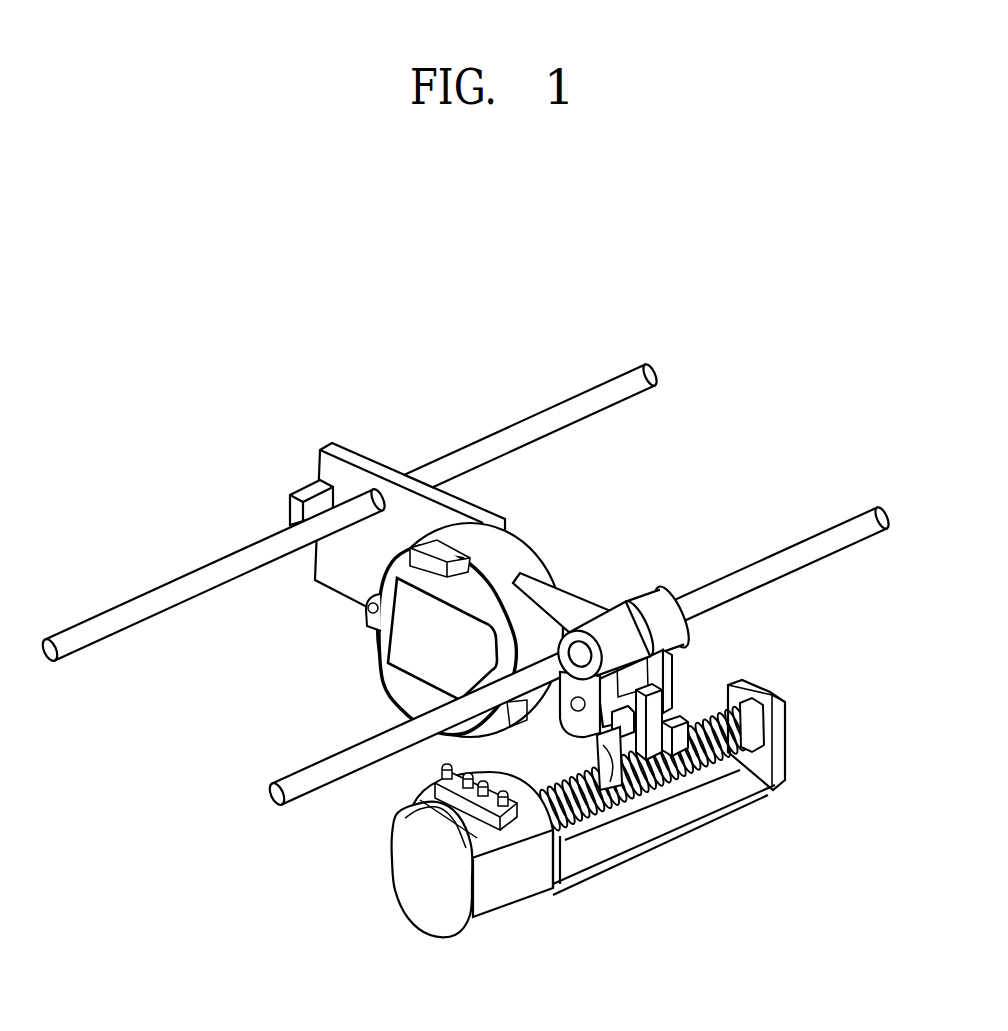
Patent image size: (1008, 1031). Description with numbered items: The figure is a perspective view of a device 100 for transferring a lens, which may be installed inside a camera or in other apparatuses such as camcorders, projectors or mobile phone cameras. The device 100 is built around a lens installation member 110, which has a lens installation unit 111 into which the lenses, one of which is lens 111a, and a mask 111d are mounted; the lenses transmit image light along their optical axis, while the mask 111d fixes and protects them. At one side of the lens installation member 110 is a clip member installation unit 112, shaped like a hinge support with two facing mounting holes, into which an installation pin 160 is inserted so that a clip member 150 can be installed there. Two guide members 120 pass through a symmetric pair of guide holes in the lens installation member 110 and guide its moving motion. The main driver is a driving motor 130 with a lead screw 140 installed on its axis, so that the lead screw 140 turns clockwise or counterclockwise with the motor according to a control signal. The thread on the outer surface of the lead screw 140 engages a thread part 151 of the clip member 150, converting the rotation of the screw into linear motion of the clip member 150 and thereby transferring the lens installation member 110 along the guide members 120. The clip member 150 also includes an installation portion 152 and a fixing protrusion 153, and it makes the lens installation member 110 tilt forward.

The device for transferring a lens 100 is at (755, 322).
The lens installation member 110 is at (318, 432).
The lens installation unit 111 is at (487, 547).
The lens 111a is at (412, 648).
The mask 111d is at (380, 627).
The clip member installation unit 112 is at (672, 672).
The guide members 120 is at (710, 592).
The driving motor 130 is at (432, 900).
The lead screw 140 is at (707, 755).
The clip member 150 is at (588, 745).
The thread part 151 is at (650, 792).
The installation portion 152 is at (633, 686).
The fixing protrusion 153 is at (603, 800).
The installation pin 160 is at (540, 652).